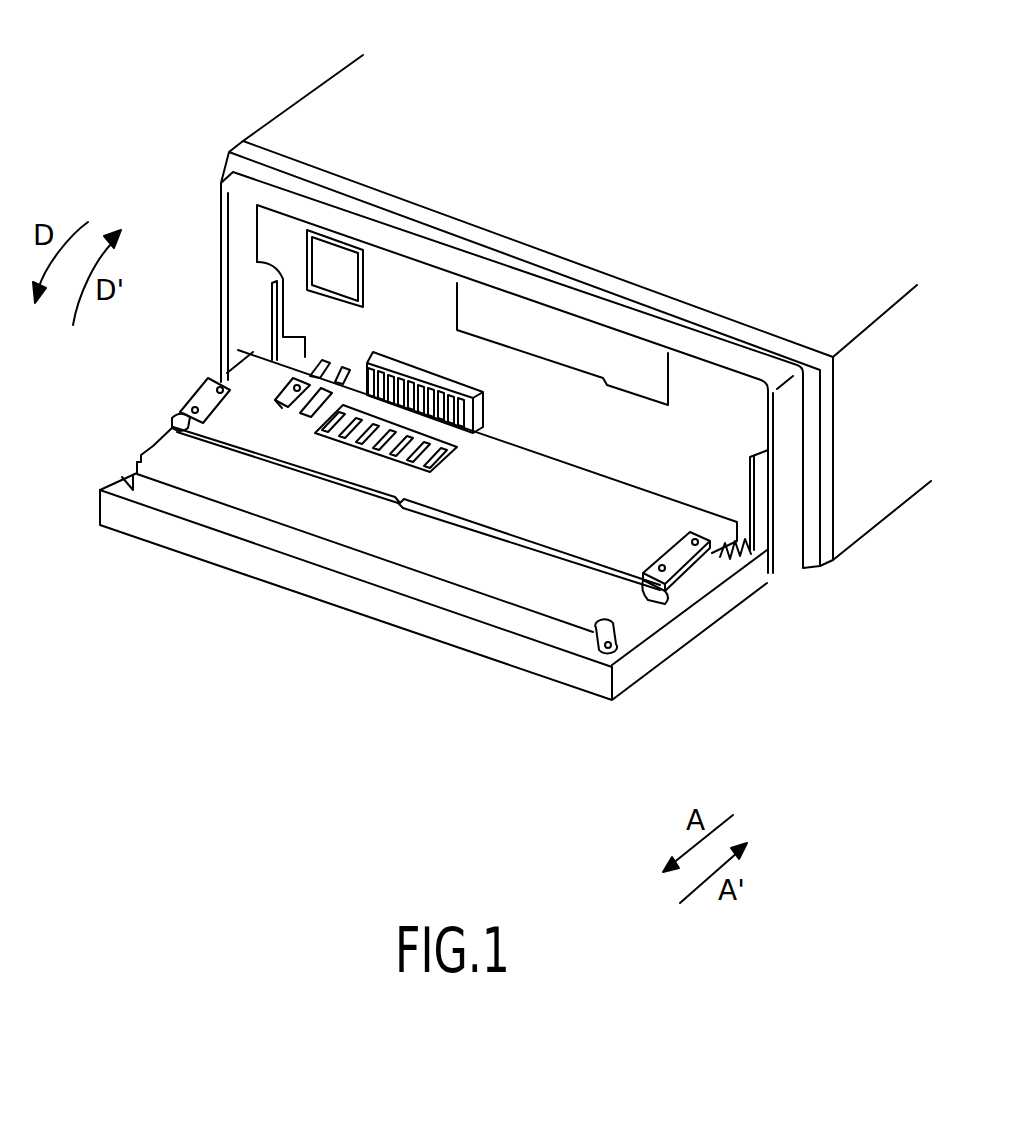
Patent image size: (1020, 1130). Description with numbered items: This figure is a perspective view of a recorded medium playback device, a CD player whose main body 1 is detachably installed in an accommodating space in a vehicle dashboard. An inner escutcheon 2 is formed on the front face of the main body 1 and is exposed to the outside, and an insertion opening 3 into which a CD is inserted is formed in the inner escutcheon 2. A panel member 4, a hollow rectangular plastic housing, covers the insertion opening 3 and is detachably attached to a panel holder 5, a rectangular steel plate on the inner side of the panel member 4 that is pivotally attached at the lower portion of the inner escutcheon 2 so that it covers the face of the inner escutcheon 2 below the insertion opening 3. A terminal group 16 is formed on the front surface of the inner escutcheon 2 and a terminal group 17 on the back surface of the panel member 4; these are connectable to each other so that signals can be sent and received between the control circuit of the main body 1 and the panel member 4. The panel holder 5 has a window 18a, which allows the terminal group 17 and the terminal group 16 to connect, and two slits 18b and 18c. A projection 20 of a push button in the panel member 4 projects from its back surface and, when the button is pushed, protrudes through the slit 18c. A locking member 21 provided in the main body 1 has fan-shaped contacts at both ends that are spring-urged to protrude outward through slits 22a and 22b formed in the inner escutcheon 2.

The main body 1 is at (341, 86).
The inner escutcheon 2 is at (238, 182).
The insertion opening 3 is at (567, 333).
The panel member 4 is at (632, 678).
The panel holder 5 is at (195, 392).
The terminal group 16 is at (417, 385).
The terminal group 17 is at (367, 452).
The window 18a is at (410, 468).
The slit 18b is at (310, 403).
The slit 18c is at (262, 396).
The projection 20 is at (295, 385).
The locking member 21 is at (340, 341).
The slit 22a is at (350, 365).
The slit 22b is at (310, 357).